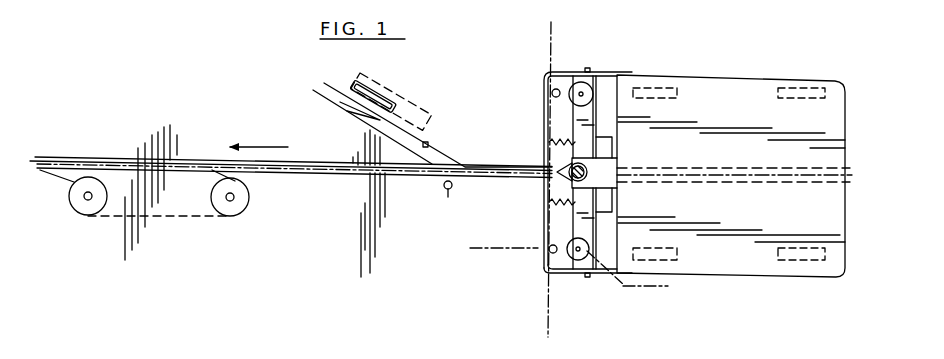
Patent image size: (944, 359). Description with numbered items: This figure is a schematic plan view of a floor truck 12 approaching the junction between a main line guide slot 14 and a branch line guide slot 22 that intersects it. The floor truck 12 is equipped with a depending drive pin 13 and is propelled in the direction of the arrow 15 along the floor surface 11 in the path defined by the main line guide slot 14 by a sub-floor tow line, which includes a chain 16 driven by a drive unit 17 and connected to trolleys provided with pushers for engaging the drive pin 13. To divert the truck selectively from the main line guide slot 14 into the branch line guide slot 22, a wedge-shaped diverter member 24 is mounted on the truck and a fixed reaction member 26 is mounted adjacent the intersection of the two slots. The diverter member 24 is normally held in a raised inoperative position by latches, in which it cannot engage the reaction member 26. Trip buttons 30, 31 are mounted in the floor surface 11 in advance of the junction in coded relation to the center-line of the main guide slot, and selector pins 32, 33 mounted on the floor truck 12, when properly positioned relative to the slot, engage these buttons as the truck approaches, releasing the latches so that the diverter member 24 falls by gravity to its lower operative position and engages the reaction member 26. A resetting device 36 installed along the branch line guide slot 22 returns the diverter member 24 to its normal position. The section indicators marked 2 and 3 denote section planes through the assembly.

The surface 11 is at (342, 239).
The floor truck 12 is at (707, 274).
The drive pin 13 is at (567, 178).
The main line guide slot 14 is at (318, 172).
The arrow 15 is at (253, 147).
The chain 16 is at (393, 172).
The drive unit 17 is at (150, 219).
The branch line guide slot 22 is at (429, 145).
The wedge-shaped diverter member 24 is at (566, 167).
The fixed reaction member 26 is at (449, 200).
The trip button 30 is at (552, 95).
The trip button 31 is at (549, 247).
The selector pin 32 is at (578, 90).
The selector pin 33 is at (578, 261).
The resetting device 36 is at (392, 92).
The section line 2- 2 is at (492, 251).
The section line 3- 3 is at (549, 37).